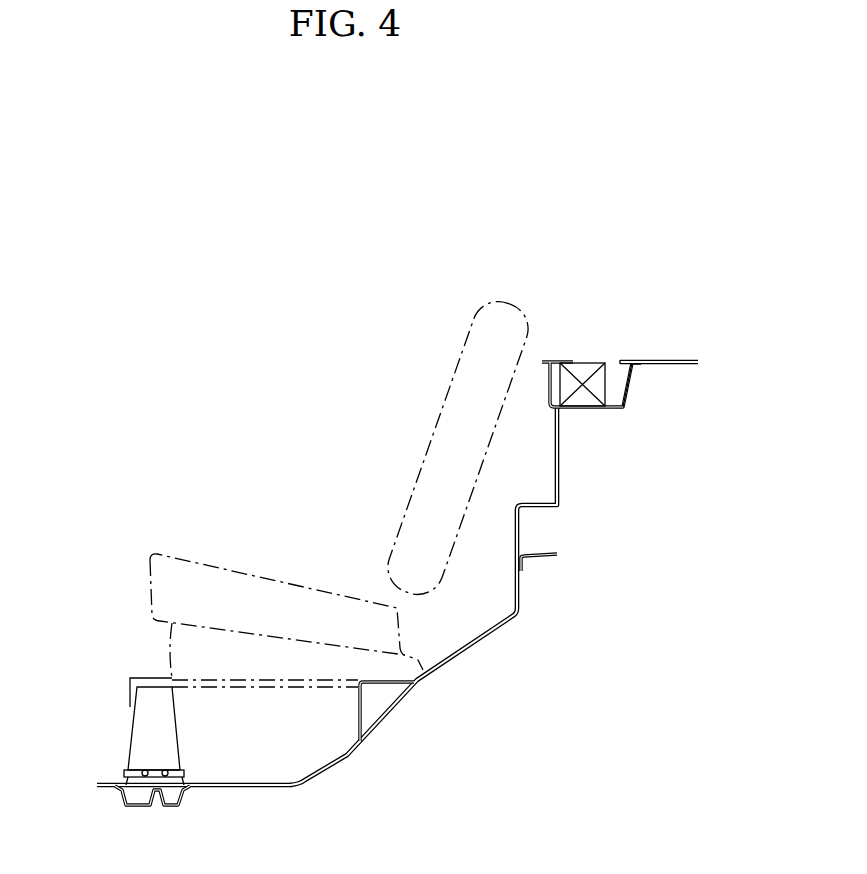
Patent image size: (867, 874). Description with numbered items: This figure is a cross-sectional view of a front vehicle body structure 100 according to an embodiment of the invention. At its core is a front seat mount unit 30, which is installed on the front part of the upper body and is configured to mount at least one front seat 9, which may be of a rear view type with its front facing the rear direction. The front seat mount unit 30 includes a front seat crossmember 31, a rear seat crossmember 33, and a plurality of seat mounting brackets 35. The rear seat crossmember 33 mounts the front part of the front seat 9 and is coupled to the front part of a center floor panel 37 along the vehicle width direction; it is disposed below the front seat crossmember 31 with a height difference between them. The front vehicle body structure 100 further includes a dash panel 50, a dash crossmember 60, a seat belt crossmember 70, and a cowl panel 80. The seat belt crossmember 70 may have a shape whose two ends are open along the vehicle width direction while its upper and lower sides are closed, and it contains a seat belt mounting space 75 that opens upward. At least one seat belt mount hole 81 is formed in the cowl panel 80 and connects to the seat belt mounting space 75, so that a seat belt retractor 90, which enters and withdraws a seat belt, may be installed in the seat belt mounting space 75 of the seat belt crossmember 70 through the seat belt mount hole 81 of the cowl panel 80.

The front vehicle body structure 100 is at (289, 255).
The front seat 9 is at (149, 622).
The front seat mount unit 30 is at (119, 753).
The front seat crossmember 31 is at (358, 710).
The rear seat crossmember 33 is at (186, 775).
The seat mounting bracket 35 is at (179, 725).
The center floor panel 37 is at (281, 788).
The dash panel 50 is at (476, 643).
The dash crossmember 60 is at (541, 558).
The seat belt crossmember 70 is at (606, 408).
The seat belt mounting space 75 is at (616, 383).
The cowl panel 80 is at (679, 360).
The seat belt mount hole 81 is at (611, 360).
The seat belt retractor 90 is at (630, 397).